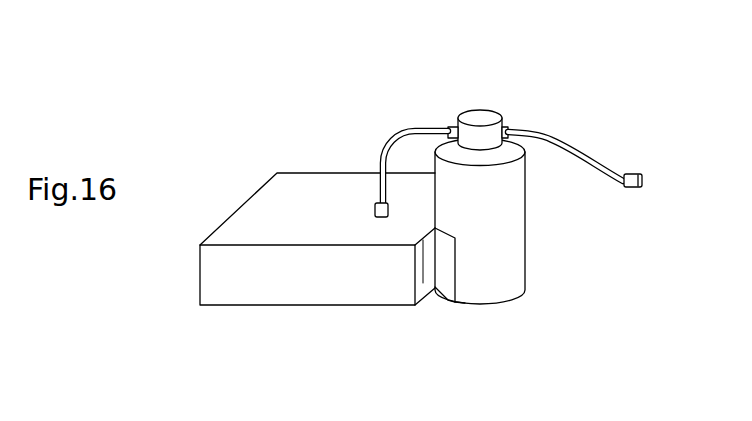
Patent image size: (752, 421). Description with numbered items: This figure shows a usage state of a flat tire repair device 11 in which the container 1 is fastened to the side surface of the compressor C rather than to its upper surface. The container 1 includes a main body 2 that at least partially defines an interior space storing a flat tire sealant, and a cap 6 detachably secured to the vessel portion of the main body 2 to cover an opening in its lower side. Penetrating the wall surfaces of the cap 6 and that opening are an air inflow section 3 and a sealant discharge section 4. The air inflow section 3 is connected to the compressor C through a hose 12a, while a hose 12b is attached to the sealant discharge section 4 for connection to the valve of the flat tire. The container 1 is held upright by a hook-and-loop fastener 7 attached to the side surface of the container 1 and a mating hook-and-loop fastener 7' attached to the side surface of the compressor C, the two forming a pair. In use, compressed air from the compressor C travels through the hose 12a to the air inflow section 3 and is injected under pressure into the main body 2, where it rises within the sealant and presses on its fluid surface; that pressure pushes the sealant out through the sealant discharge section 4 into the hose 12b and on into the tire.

The liquid supply unit 11 is at (345, 105).
The container 1 is at (516, 172).
The main body 2 is at (528, 207).
The air inflow section 3 is at (452, 127).
The sealant discharge section 4 is at (508, 130).
The cap 6 is at (485, 115).
The hose 12a is at (398, 138).
The hose 12b is at (565, 140).
The hook-and-loop fastener 7 is at (451, 297).
The hook-and-loop fastener 7' is at (425, 330).
The compressor C is at (243, 198).